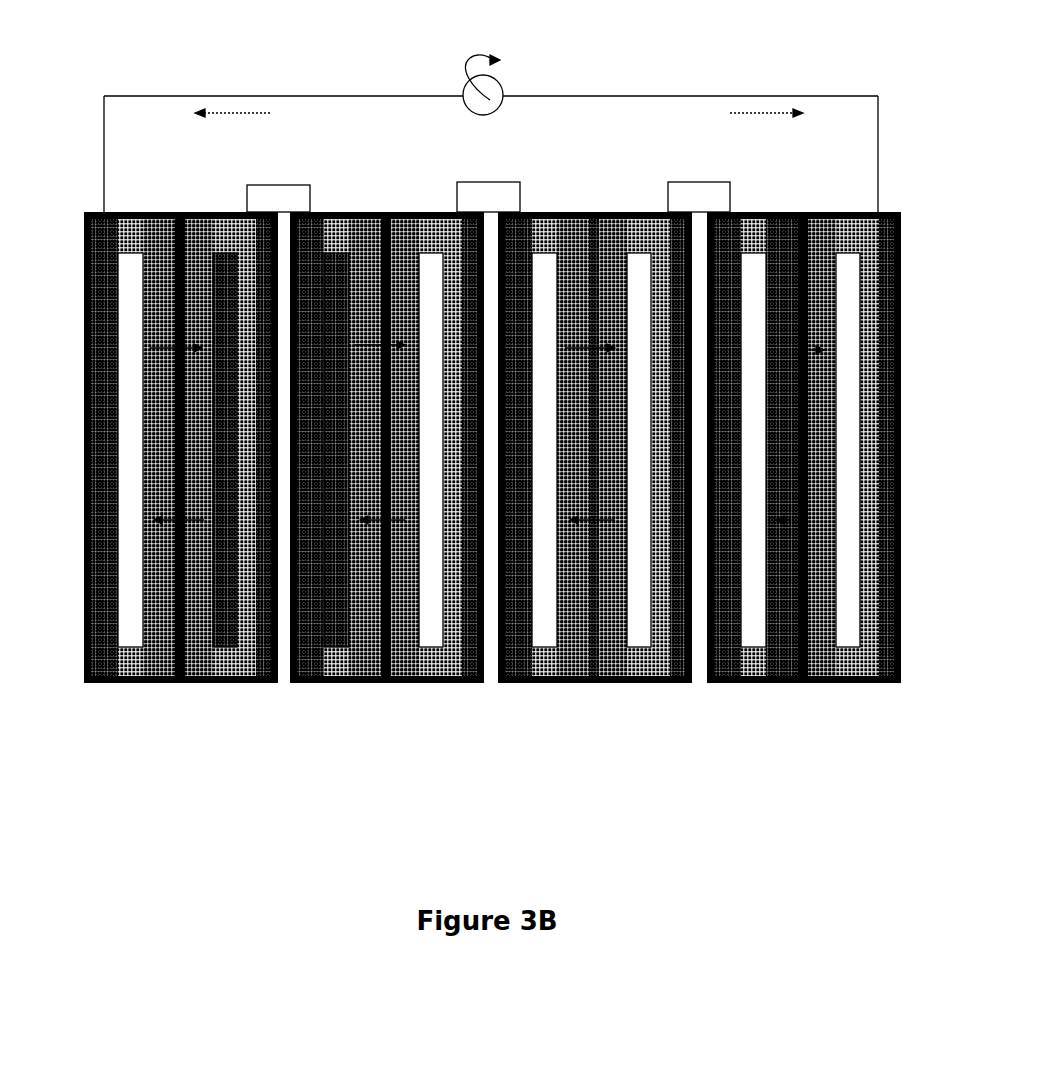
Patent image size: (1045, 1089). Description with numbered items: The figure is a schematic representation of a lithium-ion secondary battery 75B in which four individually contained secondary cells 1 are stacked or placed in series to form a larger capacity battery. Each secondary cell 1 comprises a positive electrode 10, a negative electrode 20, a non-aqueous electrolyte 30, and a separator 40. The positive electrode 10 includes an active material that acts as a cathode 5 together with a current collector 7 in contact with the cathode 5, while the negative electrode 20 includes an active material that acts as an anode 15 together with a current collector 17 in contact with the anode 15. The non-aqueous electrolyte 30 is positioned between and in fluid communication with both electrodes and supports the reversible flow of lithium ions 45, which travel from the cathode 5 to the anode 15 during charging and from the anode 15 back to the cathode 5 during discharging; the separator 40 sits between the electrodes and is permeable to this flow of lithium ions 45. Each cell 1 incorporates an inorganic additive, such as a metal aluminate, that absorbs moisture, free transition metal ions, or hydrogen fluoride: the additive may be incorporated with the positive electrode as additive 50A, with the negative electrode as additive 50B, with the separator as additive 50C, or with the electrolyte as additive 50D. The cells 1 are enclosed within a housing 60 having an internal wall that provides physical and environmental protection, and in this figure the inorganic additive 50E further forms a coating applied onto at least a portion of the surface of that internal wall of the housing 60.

The secondary lithium-ion cell 1 is at (178, 766).
The cathode 5 is at (222, 630).
The current collector 7 is at (250, 656).
The positive electrode 10 is at (197, 725).
The anode 15 is at (127, 632).
The current collector 17 is at (90, 683).
The negative electrode 20 is at (165, 725).
The non-aqueous electrolyte 30 is at (157, 238).
The separator 40 is at (178, 216).
The lithium ions 45 is at (372, 615).
The inorganic additive 50A is at (225, 452).
The inorganic additive 50B is at (345, 452).
The inorganic additive 50C is at (597, 462).
The inorganic additive 50D is at (836, 472).
The inorganic additive 50E is at (85, 623).
The housing 60 is at (85, 582).
The battery 75B is at (626, 66).